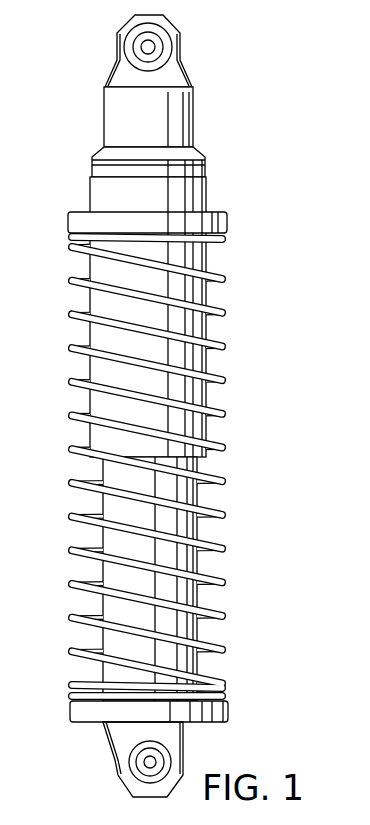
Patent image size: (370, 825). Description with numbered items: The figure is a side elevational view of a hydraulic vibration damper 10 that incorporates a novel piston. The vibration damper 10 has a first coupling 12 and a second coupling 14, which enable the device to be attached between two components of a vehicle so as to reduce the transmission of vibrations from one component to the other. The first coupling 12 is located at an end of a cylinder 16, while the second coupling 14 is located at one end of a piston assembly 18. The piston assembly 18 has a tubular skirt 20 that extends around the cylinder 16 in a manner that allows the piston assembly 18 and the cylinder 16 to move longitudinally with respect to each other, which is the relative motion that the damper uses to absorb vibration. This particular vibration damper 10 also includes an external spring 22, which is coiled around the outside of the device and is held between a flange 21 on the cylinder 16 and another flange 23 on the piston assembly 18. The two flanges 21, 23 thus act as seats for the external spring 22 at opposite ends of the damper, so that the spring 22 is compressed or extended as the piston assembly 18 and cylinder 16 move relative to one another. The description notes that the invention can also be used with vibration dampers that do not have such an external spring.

The vibration damper 10 is at (220, 148).
The first coupling 12 is at (135, 752).
The second coupling 14 is at (167, 37).
The cylinder 16 is at (198, 537).
The piston assembly 18 is at (112, 200).
The tubular skirt 20 is at (207, 432).
The flange 21 is at (92, 723).
The external spring 22 is at (217, 346).
The flange 23 is at (212, 210).